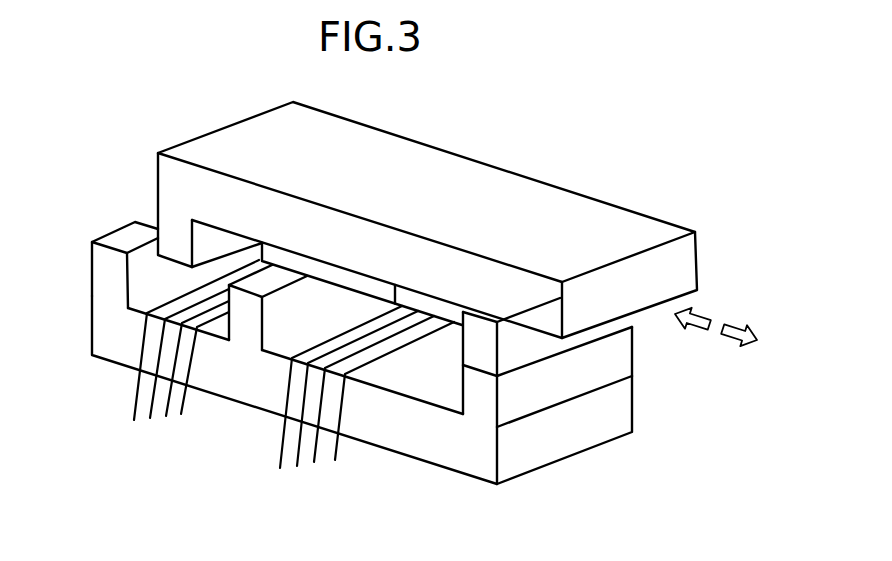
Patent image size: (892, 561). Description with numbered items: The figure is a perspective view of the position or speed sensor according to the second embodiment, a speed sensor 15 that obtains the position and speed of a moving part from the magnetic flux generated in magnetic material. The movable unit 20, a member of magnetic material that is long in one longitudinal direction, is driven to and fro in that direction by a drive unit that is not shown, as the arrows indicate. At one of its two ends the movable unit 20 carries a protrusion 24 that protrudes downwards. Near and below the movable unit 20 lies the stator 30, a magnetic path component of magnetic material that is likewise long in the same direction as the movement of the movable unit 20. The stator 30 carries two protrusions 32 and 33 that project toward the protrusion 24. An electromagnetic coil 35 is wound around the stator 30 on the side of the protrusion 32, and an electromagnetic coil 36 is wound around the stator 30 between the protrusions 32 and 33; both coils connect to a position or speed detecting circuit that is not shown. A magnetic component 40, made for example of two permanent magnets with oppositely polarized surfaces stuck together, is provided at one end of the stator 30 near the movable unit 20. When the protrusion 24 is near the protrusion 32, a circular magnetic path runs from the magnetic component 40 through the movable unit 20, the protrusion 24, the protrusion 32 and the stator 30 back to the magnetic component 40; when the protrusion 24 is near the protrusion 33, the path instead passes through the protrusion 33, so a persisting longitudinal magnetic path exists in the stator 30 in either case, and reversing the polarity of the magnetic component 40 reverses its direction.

The speed sensor 15 is at (397, 204).
The movable unit 20 is at (426, 192).
The protrusion 24 is at (180, 197).
The stator 30 is at (362, 420).
The protrusion 32 is at (255, 380).
The protrusion 33 is at (109, 240).
The electromagnetic coil 35 is at (367, 421).
The electromagnetic coil 36 is at (196, 382).
The magnetic component 40 is at (563, 401).